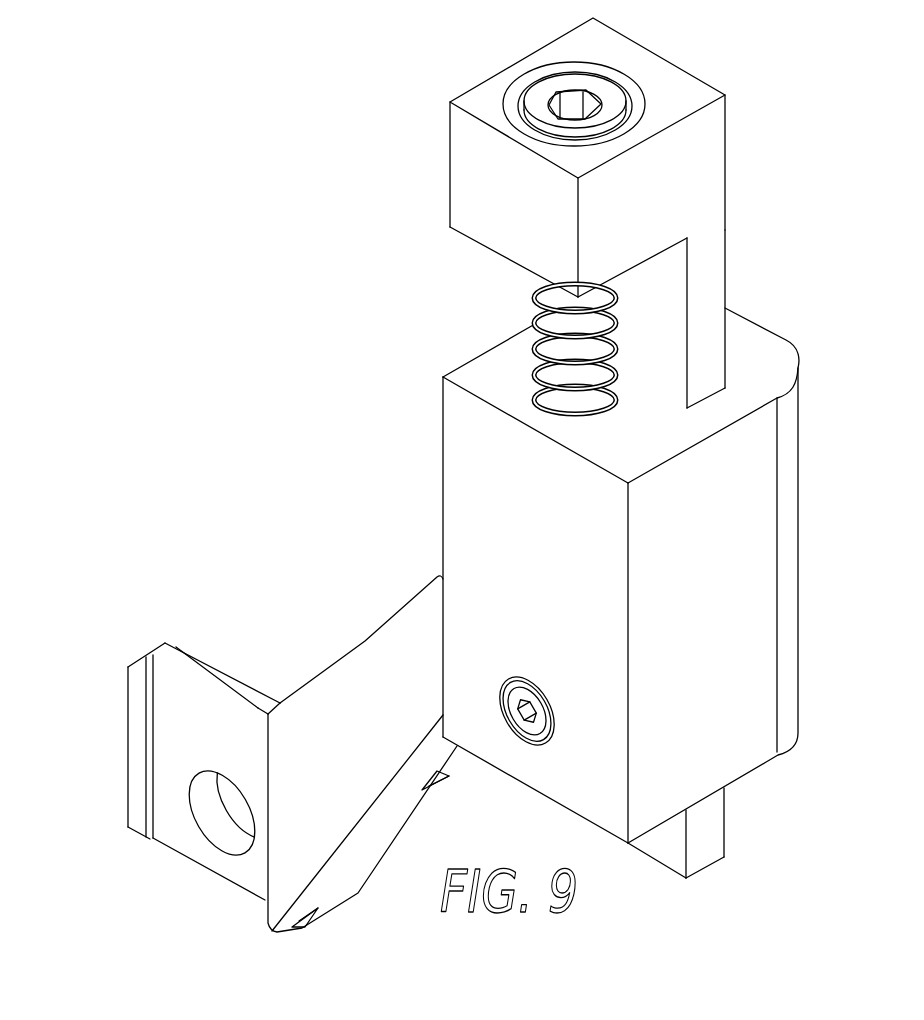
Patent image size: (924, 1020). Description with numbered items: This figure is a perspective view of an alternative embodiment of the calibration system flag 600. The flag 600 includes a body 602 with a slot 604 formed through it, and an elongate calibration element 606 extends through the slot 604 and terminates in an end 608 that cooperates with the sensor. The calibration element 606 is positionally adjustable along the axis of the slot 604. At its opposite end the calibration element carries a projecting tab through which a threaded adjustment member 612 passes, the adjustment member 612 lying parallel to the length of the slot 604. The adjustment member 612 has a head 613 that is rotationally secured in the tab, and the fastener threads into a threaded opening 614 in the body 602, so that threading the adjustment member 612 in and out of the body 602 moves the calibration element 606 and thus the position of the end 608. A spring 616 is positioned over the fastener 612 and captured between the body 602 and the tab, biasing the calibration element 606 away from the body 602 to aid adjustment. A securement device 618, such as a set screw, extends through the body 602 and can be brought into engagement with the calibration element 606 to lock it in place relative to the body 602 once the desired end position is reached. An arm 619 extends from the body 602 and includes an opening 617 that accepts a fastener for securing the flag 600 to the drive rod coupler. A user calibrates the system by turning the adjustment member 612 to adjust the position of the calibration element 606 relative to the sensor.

The flag 600 is at (275, 251).
The body 602 is at (788, 565).
The slot 604 is at (727, 384).
The calibration element 606 is at (726, 172).
The end 608 is at (712, 868).
The threaded adjustment member 612 is at (595, 405).
The head 613 is at (540, 98).
The threaded opening 614 is at (553, 407).
The spring 616 is at (537, 327).
The opening 617 is at (210, 823).
The securement device 618 is at (530, 742).
The bracket 619 is at (232, 688).